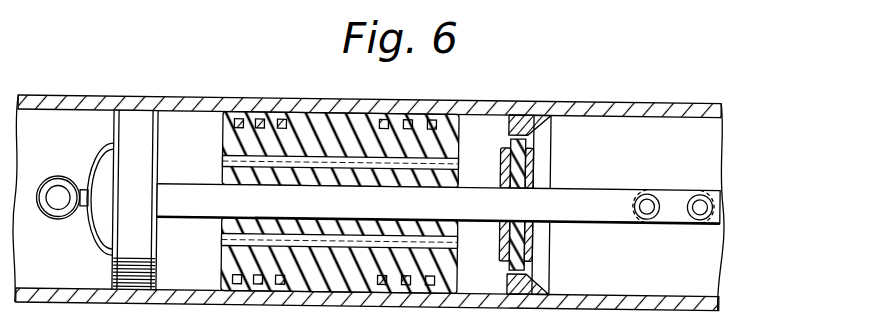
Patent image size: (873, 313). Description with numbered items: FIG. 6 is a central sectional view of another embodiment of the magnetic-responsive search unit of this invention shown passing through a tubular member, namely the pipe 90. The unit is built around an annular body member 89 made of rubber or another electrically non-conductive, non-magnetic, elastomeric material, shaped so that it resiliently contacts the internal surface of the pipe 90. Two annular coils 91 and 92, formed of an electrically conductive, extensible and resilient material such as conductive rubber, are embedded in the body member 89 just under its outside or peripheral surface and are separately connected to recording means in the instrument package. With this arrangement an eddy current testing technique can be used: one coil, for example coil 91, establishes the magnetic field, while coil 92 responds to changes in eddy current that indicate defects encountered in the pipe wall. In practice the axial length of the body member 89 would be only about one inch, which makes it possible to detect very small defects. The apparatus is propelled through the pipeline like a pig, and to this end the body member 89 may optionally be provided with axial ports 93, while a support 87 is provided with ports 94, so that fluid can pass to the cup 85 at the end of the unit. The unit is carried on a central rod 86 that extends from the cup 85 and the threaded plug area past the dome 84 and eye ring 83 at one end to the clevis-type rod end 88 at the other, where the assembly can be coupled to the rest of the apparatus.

The eye ring 83 is at (56, 221).
The domed end cap 84 is at (95, 172).
The cup 85 is at (138, 122).
The piston rod 86 is at (190, 205).
The support 87 is at (543, 134).
The rod end clevis 88 is at (673, 194).
The annular body member 89 is at (222, 145).
The pipe 90 is at (487, 104).
The annular coil 91 is at (259, 118).
The annular coil 92 is at (408, 117).
The axial ports 93 is at (459, 165).
The ports 94 is at (509, 133).